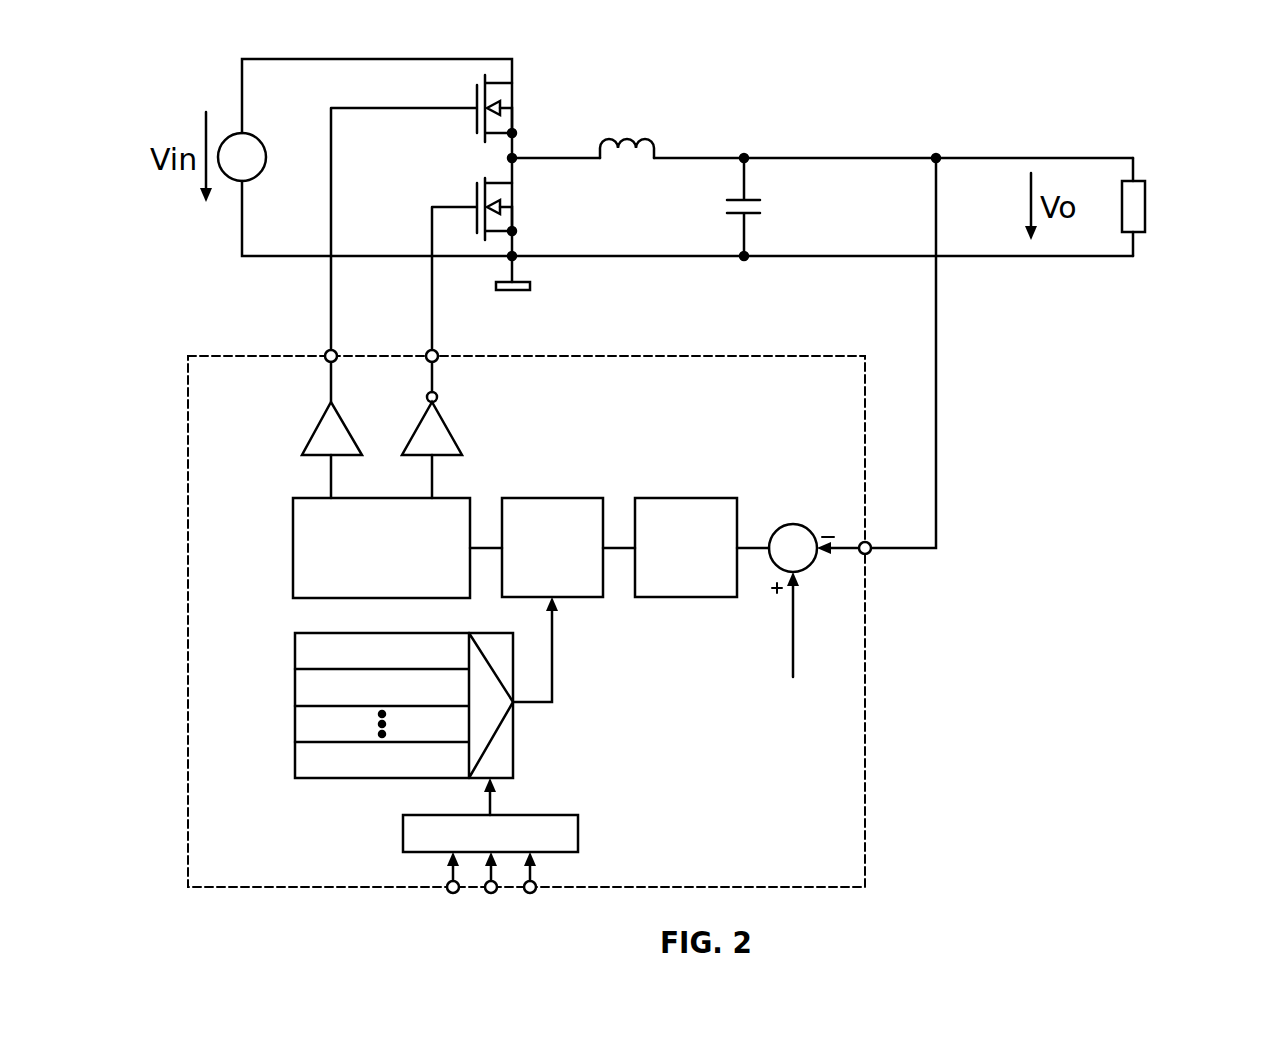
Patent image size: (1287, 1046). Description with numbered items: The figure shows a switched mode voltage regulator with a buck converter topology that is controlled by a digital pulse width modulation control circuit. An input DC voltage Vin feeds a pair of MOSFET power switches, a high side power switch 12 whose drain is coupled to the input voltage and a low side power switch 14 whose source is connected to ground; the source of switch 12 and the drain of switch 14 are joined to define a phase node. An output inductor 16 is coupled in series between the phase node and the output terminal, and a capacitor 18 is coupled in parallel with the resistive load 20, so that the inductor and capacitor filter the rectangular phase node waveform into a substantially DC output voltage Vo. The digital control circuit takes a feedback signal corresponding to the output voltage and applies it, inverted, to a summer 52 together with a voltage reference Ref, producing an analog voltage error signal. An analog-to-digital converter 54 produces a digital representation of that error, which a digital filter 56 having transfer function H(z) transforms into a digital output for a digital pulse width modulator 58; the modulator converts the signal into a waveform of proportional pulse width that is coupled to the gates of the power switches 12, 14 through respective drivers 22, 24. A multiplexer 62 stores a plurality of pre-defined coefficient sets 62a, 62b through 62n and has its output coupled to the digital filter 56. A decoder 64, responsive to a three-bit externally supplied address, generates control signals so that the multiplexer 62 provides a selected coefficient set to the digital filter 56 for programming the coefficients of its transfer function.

The high side power switch 12 is at (513, 121).
The low side power switch 14 is at (513, 219).
The output inductor 16 is at (628, 136).
The capacitor 18 is at (758, 206).
The resistive load 20 is at (1146, 188).
The driver 22 is at (315, 428).
The driver 24 is at (448, 428).
The summer 52 is at (795, 524).
The analog-to-digital converter 54 is at (680, 498).
The digital filter 56 is at (548, 498).
The digital pulse width modulator 58 is at (293, 548).
The multiplexer 62 is at (399, 687).
The coefficient set 62a is at (295, 650).
The coefficient set 62b is at (295, 686).
The coefficient set 62n is at (295, 760).
The decoder 64 is at (521, 815).